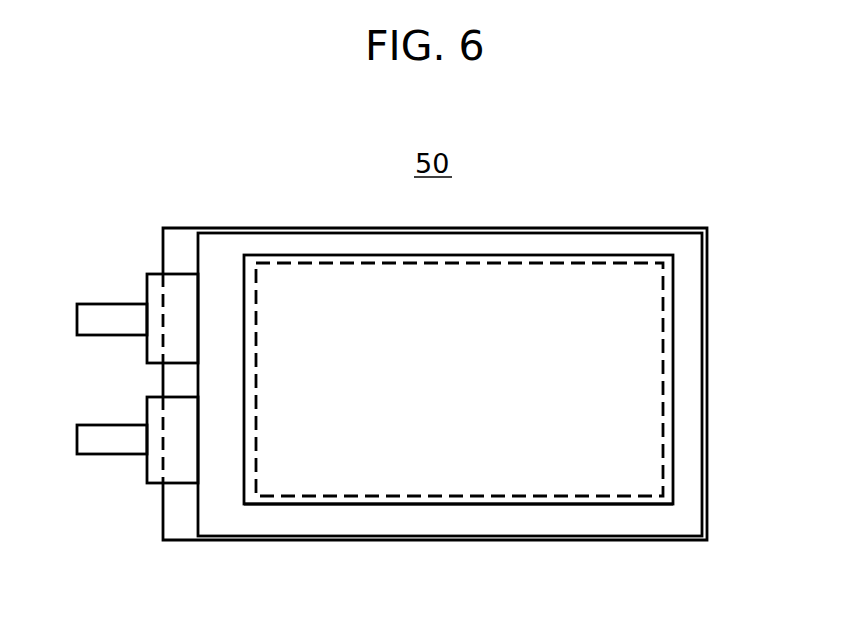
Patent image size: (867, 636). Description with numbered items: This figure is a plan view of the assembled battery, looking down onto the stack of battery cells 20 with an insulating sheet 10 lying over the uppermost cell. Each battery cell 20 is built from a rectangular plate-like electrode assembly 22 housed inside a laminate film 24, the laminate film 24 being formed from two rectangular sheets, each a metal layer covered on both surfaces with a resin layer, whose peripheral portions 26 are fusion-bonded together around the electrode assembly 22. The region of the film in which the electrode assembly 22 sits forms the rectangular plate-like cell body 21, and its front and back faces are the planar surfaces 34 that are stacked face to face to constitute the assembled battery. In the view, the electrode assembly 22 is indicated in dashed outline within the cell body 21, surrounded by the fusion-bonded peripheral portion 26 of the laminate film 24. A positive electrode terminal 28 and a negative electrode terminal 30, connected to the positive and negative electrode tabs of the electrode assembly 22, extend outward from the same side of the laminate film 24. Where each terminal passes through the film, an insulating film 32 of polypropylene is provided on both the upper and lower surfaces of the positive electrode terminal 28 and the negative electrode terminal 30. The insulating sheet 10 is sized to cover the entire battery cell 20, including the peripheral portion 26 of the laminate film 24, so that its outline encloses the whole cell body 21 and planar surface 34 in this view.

The insulating sheet 10 is at (181, 527).
The battery cell 20 is at (540, 245).
The cell body 21 is at (602, 429).
The electrode assembly 22 is at (665, 379).
The laminate film 24 is at (271, 243).
The peripheral portion 26 is at (451, 525).
The positive electrode terminal 28 is at (108, 455).
The negative electrode terminal 30 is at (100, 307).
The insulating film 32 is at (153, 272).
The planar surface 34 is at (595, 306).